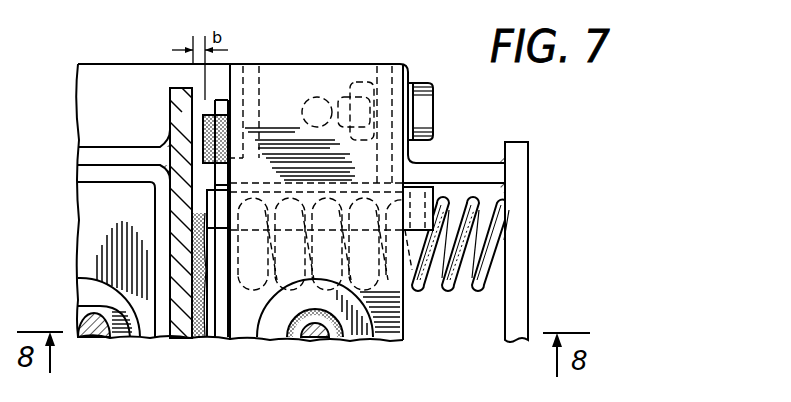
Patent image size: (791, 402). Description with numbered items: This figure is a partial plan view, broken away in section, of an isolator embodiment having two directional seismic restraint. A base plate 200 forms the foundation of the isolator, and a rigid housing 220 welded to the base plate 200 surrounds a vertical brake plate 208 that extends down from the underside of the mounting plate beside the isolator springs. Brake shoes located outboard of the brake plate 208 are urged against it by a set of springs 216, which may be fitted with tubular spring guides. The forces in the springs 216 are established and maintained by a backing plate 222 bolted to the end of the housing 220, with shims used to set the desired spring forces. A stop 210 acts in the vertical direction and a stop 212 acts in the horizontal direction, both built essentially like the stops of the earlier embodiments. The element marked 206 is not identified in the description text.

The base plate 200 is at (117, 76).
The bearing 206 is at (123, 323).
The vertical brake plate 208 is at (178, 323).
The stop 210 is at (355, 330).
The stop 212 is at (222, 124).
The spring 216 is at (456, 282).
The rigid housing 220 is at (329, 56).
The backing plate 222 is at (540, 190).